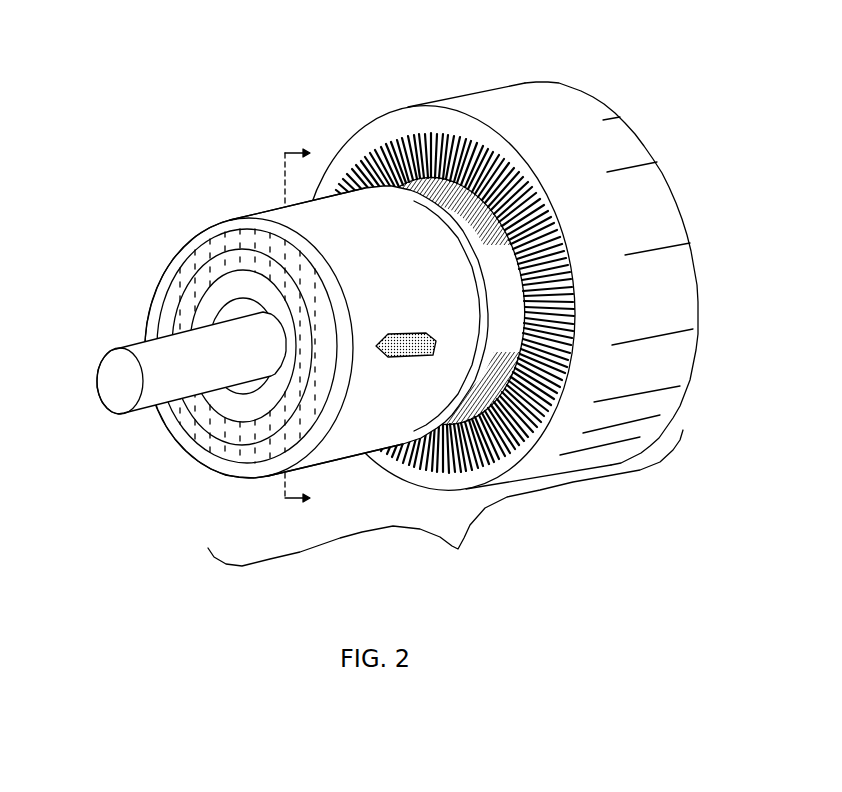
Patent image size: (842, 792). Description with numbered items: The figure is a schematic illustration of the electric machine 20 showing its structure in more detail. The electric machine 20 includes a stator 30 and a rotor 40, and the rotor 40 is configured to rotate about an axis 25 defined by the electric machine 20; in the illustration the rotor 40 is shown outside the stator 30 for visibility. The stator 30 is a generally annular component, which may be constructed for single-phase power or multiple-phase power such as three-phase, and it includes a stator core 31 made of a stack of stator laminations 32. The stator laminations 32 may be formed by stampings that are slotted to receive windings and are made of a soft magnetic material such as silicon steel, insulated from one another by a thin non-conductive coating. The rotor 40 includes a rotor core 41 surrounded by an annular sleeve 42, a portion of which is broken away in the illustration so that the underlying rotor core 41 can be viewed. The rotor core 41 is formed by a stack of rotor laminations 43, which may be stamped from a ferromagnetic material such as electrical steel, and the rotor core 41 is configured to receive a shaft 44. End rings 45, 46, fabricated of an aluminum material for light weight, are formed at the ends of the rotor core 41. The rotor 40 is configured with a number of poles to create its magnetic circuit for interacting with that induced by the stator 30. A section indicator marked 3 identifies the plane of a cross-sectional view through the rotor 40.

The electric machine 20 is at (445, 506).
The axis 25 is at (120, 382).
The stator 30 is at (520, 271).
The stator core 31 is at (684, 322).
The stator laminations 32 is at (645, 162).
The rotor 40 is at (265, 321).
The rotor core 41 is at (392, 340).
The annular sleeve 42 is at (380, 450).
The rotor laminations 43 is at (413, 353).
The shaft 44 is at (133, 345).
The end ring 45 is at (157, 287).
The end ring 46 is at (505, 198).
The section line 3- 3 is at (306, 326).